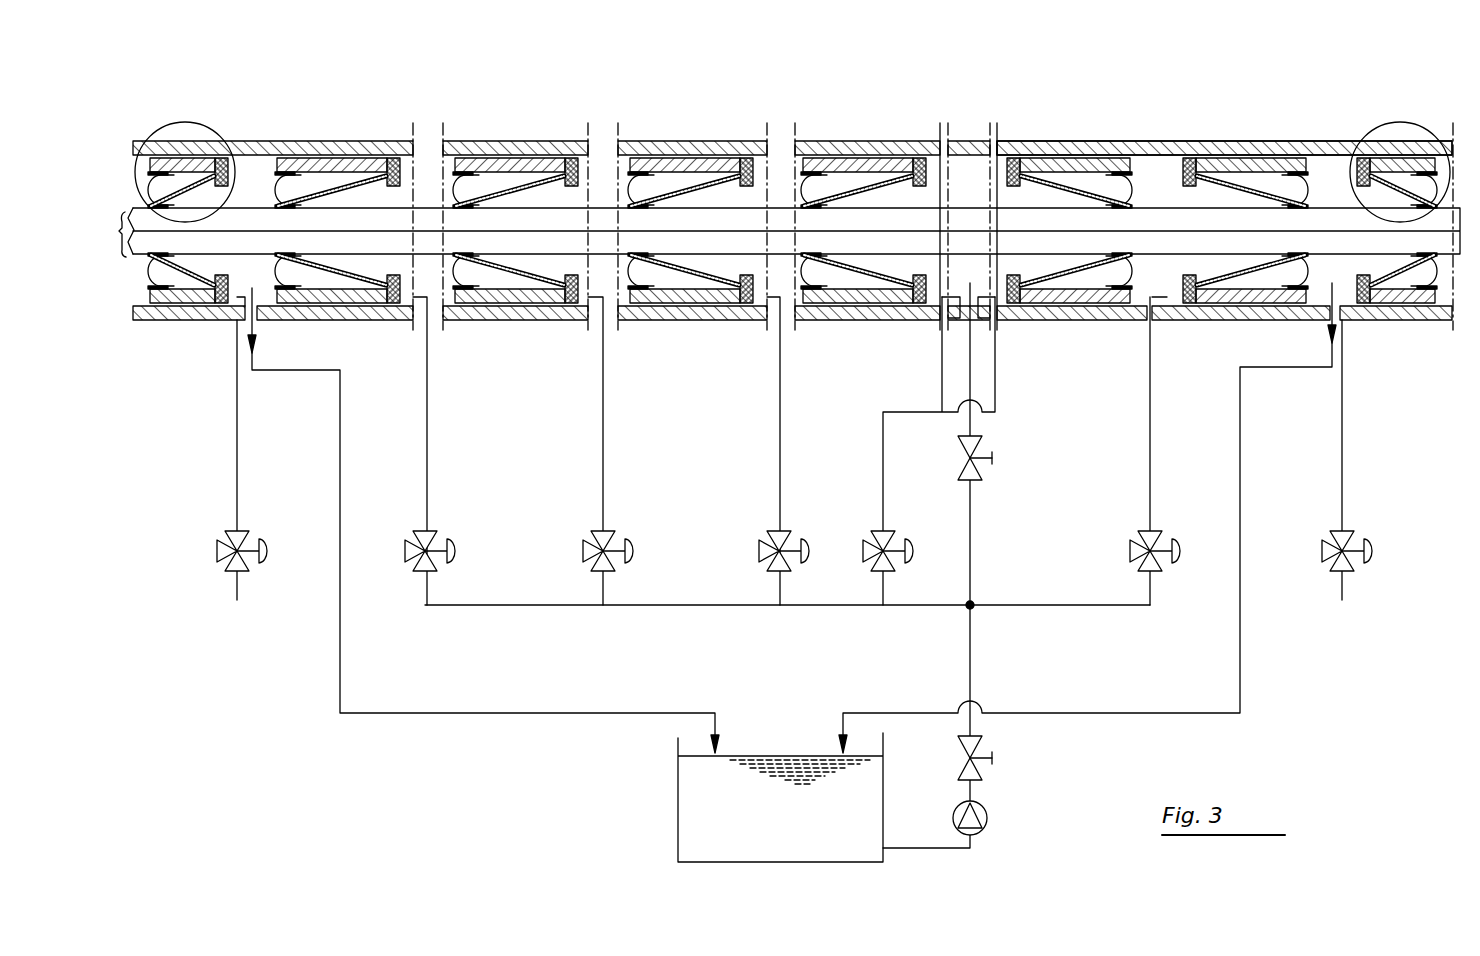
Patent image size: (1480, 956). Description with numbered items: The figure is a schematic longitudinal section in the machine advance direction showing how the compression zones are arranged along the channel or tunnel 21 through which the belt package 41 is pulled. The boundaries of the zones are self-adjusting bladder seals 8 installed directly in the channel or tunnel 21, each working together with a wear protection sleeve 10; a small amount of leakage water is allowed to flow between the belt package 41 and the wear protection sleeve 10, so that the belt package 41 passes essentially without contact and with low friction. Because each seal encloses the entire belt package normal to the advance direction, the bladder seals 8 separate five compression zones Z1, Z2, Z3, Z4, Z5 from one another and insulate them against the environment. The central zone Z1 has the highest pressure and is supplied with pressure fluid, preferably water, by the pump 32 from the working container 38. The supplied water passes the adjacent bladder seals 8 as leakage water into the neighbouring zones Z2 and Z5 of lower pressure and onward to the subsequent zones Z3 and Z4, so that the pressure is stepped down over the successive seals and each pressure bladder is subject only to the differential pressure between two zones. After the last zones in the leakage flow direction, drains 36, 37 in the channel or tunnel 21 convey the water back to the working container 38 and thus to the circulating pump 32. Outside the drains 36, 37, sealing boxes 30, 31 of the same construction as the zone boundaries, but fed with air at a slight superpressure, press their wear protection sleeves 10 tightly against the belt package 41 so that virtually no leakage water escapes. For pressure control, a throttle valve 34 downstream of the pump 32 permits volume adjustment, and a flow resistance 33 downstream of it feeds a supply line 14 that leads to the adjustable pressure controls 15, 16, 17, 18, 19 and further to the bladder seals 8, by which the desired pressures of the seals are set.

The bladder seal 8 is at (835, 185).
The wear protection sleeve 10 is at (175, 170).
The supply line 14 is at (697, 607).
The pressure control 15 is at (887, 532).
The pressure control 16 is at (1155, 532).
The pressure control 17 is at (787, 532).
The pressure control 18 is at (613, 532).
The pressure control 19 is at (430, 532).
The channel or tunnel 21 is at (1141, 168).
The sealing box 30 is at (206, 125).
The sealing box 31 is at (1406, 123).
The pump 32 is at (987, 822).
The flow resistance 33 is at (979, 447).
The throttle valve 34 is at (985, 768).
The drain 36 is at (258, 322).
The drain 37 is at (1327, 320).
The working container 38 is at (795, 835).
The belt package 41 is at (121, 227).
The compression zone Z1 is at (965, 180).
The compression zone Z2 is at (757, 190).
The compression zone Z3 is at (583, 190).
The compression zone Z4 is at (405, 200).
The compression zone Z5 is at (1157, 185).